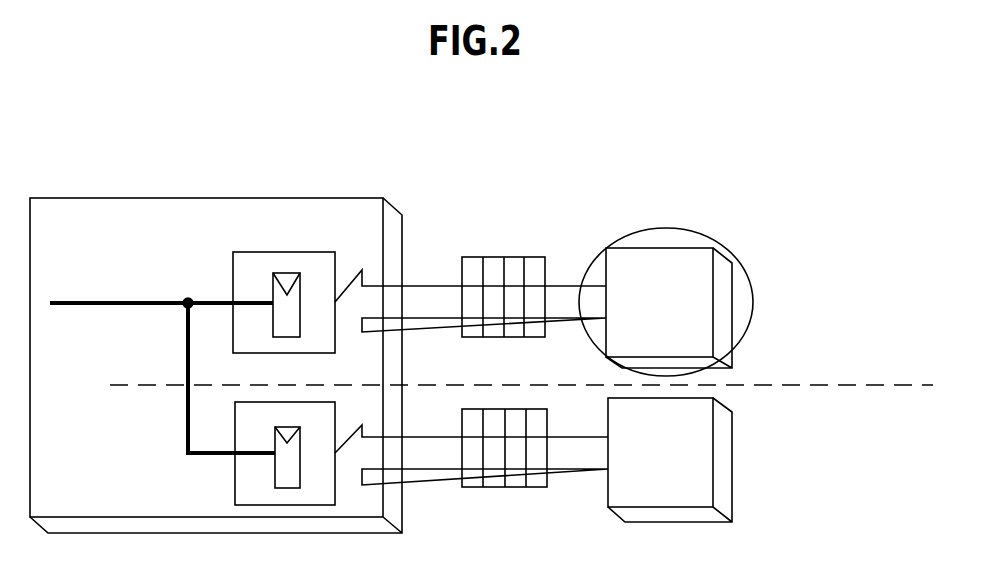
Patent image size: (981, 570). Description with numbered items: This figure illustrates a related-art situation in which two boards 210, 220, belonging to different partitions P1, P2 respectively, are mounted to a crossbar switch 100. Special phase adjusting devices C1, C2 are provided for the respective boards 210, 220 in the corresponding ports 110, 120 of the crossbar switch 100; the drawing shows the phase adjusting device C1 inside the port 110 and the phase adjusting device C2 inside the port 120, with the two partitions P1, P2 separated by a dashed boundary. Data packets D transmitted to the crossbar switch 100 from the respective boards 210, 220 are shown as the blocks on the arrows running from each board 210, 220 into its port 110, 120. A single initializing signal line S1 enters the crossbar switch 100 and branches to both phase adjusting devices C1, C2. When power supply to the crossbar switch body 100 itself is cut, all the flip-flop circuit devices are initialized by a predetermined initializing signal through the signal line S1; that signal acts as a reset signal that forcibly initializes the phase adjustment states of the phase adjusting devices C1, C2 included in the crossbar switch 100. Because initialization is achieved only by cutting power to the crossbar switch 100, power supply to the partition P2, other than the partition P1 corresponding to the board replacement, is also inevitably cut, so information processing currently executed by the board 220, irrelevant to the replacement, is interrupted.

The crossbar switch 100 is at (143, 198).
The port 110 is at (240, 252).
The port 120 is at (235, 484).
The board 210 is at (715, 248).
The board 220 is at (732, 458).
The initializing signal line S1 is at (92, 303).
The phase adjusting device C1 is at (287, 273).
The phase adjusting device C2 is at (300, 442).
The data packets D is at (535, 257).
The partition P1 is at (521, 368).
The partition P2 is at (911, 412).